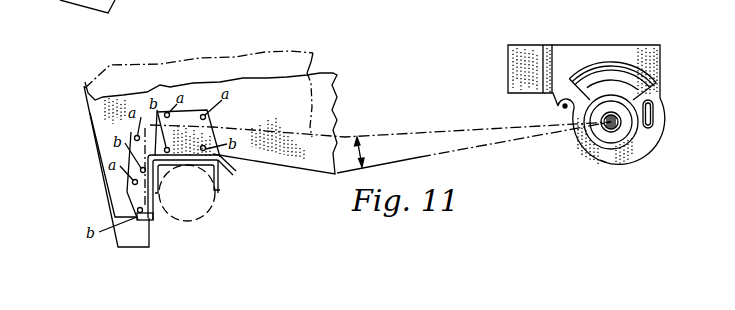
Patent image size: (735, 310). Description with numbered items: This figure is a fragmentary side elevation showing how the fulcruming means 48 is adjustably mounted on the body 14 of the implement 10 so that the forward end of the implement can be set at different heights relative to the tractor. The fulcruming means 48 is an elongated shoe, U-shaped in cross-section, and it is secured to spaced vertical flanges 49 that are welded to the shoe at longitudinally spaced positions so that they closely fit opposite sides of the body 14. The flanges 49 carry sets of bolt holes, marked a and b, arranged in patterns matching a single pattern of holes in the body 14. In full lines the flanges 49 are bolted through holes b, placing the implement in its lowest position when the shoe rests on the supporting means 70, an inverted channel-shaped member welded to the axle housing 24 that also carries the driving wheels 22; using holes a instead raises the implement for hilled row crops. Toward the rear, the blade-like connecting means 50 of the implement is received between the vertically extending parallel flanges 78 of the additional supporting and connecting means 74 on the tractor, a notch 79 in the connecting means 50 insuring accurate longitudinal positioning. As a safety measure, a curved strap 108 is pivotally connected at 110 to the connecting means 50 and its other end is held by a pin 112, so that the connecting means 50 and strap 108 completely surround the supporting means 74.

The implement 10 is at (153, 0).
The driving wheel 22 is at (444, 6).
The body 14 is at (293, 60).
The fulcruming means 48 is at (226, 166).
The vertical flanges 49 is at (188, 117).
The supporting means 70 is at (219, 194).
The axle housing 24 is at (195, 215).
The connecting means 50 is at (584, 53).
The vertically extending parallel flanges 78 is at (618, 70).
The notch 79 is at (633, 102).
The additional supporting and connecting means 74 is at (625, 143).
The pin 112 is at (653, 122).
The pivotal connection 110 is at (561, 107).
The curved strap 108 is at (597, 162).